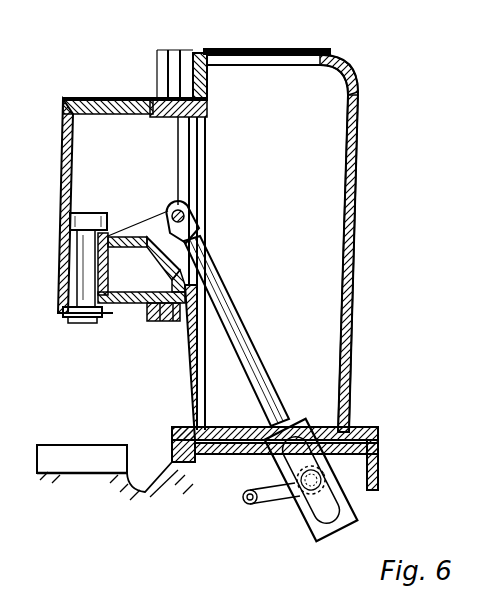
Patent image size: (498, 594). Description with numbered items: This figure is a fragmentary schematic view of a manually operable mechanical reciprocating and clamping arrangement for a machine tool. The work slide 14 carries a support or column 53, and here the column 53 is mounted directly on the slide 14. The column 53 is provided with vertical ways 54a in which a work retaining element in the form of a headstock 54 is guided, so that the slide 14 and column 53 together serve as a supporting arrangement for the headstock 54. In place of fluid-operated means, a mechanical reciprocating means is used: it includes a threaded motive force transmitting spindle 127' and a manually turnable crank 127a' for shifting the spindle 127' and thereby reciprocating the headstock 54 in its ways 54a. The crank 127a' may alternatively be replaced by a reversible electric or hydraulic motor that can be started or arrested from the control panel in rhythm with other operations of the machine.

The support or column 53 is at (360, 91).
The headstock 54 is at (63, 143).
The vertical ways 54a is at (165, 62).
The threaded motive force transmitting spindle 127' is at (227, 313).
The manually turnable crank 127a' is at (288, 480).
The work slide 14 is at (364, 498).